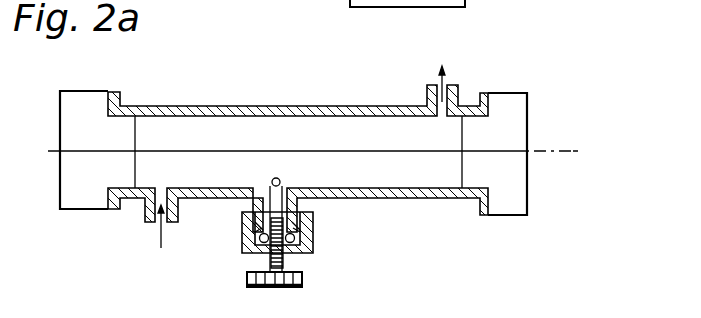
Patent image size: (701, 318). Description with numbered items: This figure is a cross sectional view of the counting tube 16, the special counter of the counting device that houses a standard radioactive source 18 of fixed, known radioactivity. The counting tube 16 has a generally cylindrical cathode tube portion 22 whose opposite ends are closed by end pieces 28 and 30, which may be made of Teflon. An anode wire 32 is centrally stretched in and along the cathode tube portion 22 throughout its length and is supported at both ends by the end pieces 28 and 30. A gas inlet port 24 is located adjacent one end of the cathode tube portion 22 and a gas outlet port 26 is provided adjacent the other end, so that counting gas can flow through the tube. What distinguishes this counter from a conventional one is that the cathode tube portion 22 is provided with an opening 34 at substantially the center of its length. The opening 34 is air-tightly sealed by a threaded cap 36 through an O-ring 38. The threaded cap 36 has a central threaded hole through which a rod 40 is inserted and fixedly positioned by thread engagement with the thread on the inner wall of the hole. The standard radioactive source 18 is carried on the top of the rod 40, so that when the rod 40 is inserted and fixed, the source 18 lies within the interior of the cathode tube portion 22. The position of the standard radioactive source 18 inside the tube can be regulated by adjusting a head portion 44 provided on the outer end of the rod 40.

The counting tube 16 is at (345, 89).
The standard radioactive source 18 is at (281, 176).
The cathode tube portion 22 is at (255, 106).
The gas inlet port 24 is at (172, 225).
The gas outlet port 26 is at (455, 86).
The end piece 28 is at (81, 98).
The end piece 30 is at (506, 95).
The anode wire 32 is at (533, 152).
The opening 34 is at (298, 201).
The threaded cap 36 is at (301, 240).
The O-ring 38 is at (292, 258).
The rod 40 is at (312, 216).
The head portion 44 is at (300, 283).